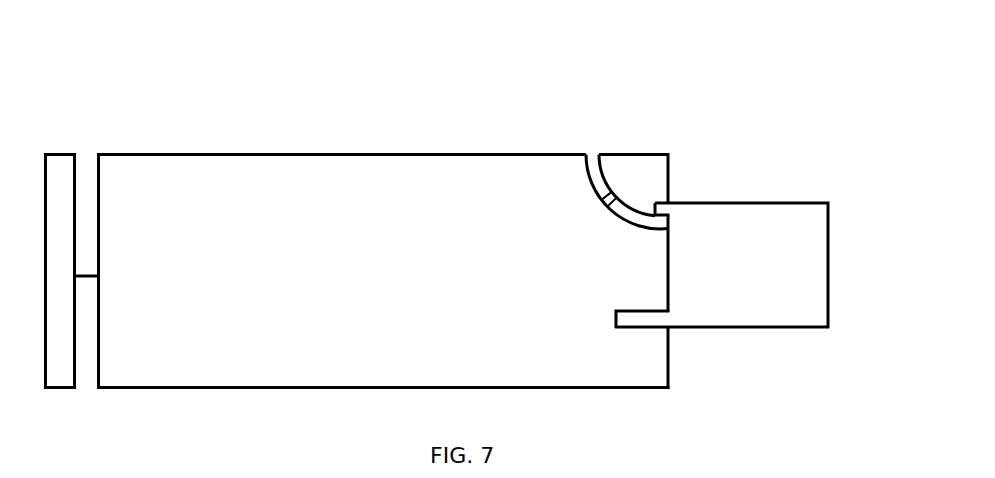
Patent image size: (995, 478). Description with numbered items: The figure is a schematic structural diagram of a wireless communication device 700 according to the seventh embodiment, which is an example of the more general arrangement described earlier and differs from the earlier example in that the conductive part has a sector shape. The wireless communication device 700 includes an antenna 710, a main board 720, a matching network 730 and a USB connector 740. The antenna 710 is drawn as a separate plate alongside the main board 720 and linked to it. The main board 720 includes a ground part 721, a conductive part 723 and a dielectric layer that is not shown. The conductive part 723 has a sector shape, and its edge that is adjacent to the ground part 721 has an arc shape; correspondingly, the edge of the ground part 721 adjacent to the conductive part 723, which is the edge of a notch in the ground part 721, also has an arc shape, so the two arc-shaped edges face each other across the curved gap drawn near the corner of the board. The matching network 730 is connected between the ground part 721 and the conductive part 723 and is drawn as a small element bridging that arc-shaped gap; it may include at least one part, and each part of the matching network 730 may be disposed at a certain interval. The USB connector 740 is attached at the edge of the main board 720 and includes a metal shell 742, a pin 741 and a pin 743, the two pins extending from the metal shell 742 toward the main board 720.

The wireless communication device 700 is at (448, 24).
The antenna 710 is at (132, 240).
The main board 720 is at (383, 231).
The ground part 721 is at (384, 131).
The conductive part 723 is at (579, 168).
The matching network 730 is at (554, 222).
The USB connector 740 is at (743, 244).
The pin 741 is at (721, 175).
The metal shell 742 is at (729, 247).
The pin 743 is at (711, 353).